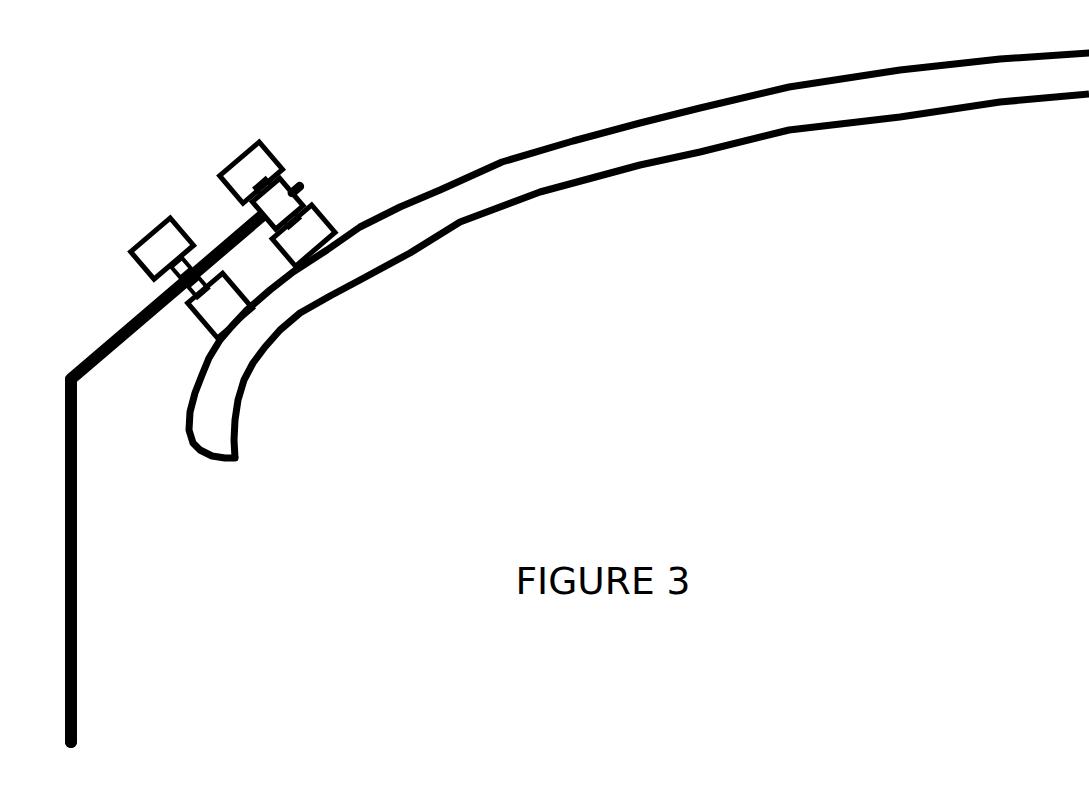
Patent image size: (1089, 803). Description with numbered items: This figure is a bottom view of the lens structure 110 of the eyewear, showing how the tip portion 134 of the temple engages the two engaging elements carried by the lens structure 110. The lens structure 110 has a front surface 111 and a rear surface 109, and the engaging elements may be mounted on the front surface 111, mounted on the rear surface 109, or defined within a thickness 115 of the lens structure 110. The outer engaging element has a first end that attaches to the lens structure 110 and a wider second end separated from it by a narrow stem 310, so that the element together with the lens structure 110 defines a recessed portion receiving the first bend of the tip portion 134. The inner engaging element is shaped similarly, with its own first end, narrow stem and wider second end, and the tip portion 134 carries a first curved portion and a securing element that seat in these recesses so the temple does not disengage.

The rear surface 109 is at (642, 172).
The lens structure 110 is at (746, 125).
The front surface 111 is at (501, 156).
The thickness 115 is at (569, 145).
The tip portion 134 is at (104, 366).
The narrow stem 310 is at (165, 289).